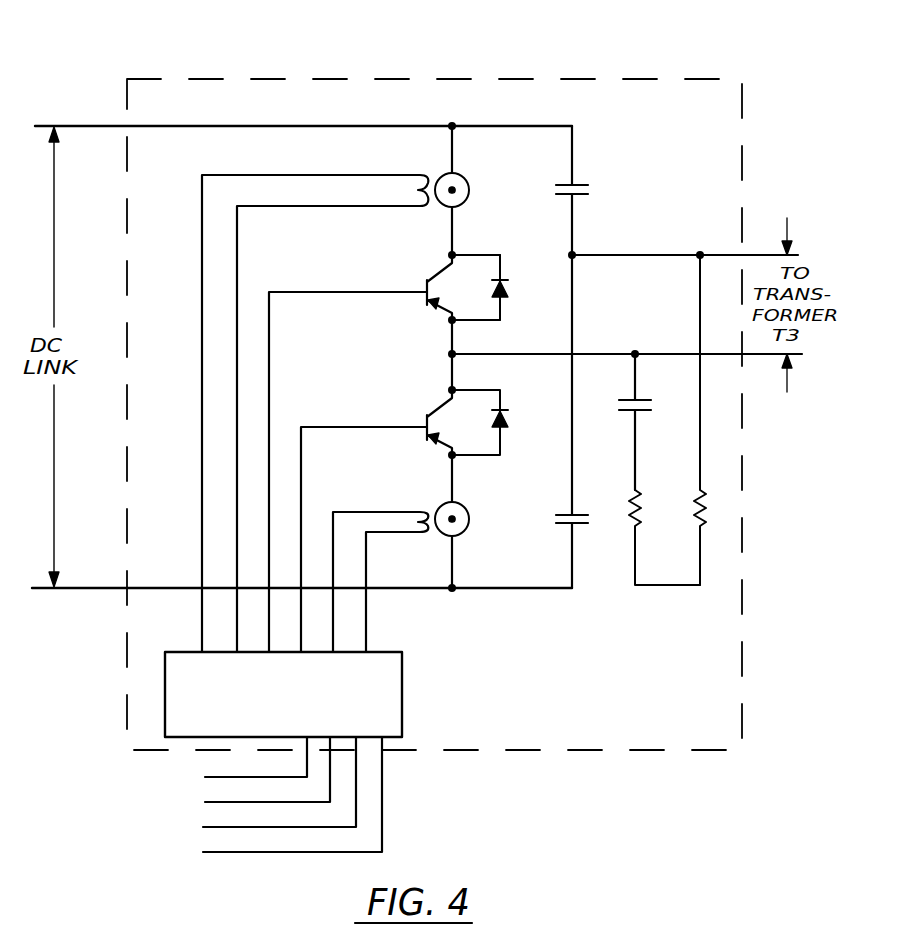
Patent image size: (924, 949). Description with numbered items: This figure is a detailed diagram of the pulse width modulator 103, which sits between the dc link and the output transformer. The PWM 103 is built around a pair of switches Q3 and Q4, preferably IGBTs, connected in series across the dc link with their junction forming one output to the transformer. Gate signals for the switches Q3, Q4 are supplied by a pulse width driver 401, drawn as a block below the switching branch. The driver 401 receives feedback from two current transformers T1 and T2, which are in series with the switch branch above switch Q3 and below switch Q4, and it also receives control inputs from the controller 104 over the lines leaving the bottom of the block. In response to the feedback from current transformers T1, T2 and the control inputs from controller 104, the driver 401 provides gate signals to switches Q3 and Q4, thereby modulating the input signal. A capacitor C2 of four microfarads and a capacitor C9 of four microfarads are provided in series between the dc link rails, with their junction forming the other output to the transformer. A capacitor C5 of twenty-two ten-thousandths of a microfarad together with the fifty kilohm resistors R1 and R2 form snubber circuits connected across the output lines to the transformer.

The pulse width modulator 103 is at (525, 72).
The pulse width driver 401 is at (403, 681).
The controller 104 is at (212, 794).
The current transformer T1 is at (470, 183).
The current transformer T2 is at (470, 522).
The switch Q3 is at (438, 272).
The switch Q4 is at (440, 403).
The capacitor C2 is at (591, 190).
The capacitor C5 is at (652, 422).
The capacitor C9 is at (589, 421).
The resistor R1 is at (664, 537).
The resistor R2 is at (717, 420).